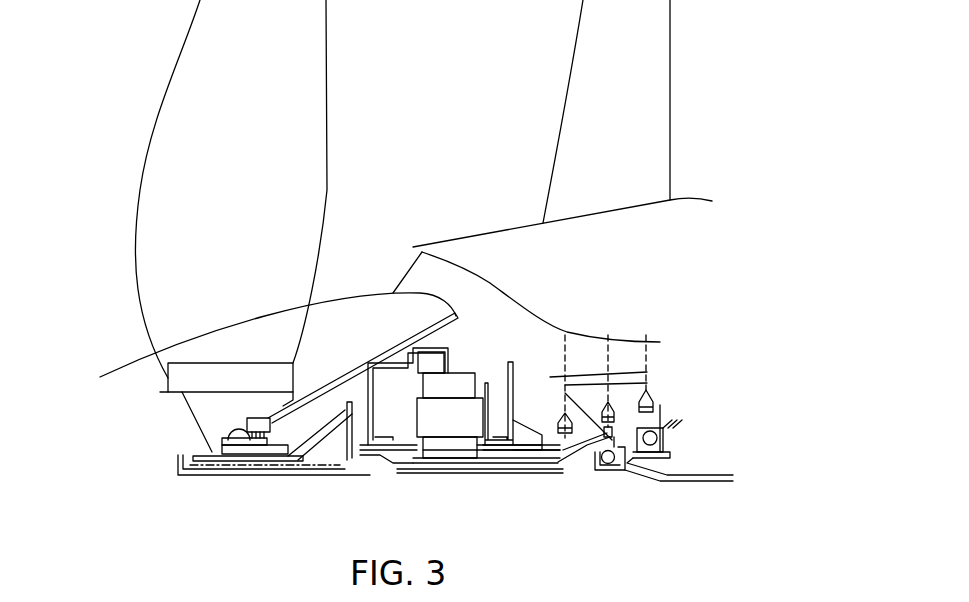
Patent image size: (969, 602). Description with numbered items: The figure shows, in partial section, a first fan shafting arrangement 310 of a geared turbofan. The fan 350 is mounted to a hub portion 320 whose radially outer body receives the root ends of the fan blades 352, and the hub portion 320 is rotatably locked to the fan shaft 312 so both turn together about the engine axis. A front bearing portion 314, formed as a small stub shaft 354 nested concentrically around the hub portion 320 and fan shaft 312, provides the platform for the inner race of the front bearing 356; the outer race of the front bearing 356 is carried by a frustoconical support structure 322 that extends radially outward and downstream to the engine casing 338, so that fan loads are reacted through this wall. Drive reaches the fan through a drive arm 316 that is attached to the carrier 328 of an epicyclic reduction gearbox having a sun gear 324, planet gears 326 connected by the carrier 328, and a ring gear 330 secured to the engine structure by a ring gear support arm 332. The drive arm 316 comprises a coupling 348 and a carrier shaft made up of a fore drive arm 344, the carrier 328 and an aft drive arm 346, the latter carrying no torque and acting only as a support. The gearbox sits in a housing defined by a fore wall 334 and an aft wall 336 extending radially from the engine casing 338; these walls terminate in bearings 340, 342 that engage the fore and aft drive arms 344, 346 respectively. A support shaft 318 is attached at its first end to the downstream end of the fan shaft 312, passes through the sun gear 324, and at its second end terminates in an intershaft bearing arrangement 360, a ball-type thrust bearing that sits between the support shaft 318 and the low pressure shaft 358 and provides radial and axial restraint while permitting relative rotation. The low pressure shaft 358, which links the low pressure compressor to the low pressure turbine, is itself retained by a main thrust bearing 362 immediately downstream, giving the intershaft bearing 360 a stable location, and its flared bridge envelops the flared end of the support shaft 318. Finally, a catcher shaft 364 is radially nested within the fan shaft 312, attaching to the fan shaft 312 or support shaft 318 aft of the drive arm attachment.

The fan shafting arrangement 310 is at (133, 501).
The fan shaft 312 is at (247, 472).
The front bearing portion 314 is at (257, 412).
The drive arm 316 is at (372, 466).
The support shaft 318 is at (430, 481).
The hub portion 320 is at (180, 391).
The support structure 322 is at (330, 382).
The sun gear 324 is at (465, 454).
The planet gears 326 is at (478, 388).
The carrier 328 is at (490, 400).
The ring gear 330 is at (432, 385).
The ring gear support arm 332 is at (423, 352).
The fore wall 334 is at (368, 368).
The aft wall 336 is at (520, 392).
The engine casing 338 is at (452, 325).
The bearing 340 is at (393, 390).
The bearing 342 is at (510, 449).
The fore drive arm 344 is at (403, 458).
The aft drive arm 346 is at (543, 452).
The coupling 348 is at (338, 434).
The fan 350 is at (176, 156).
The fan blades 352 is at (270, 121).
The front bearing portion 354 is at (230, 448).
The front bearing 356 is at (232, 440).
The low pressure shaft 358 is at (700, 475).
The intershaft bearing arrangement 360 is at (612, 436).
The thrust bearing 362 is at (656, 438).
The catcher shaft 364 is at (174, 470).